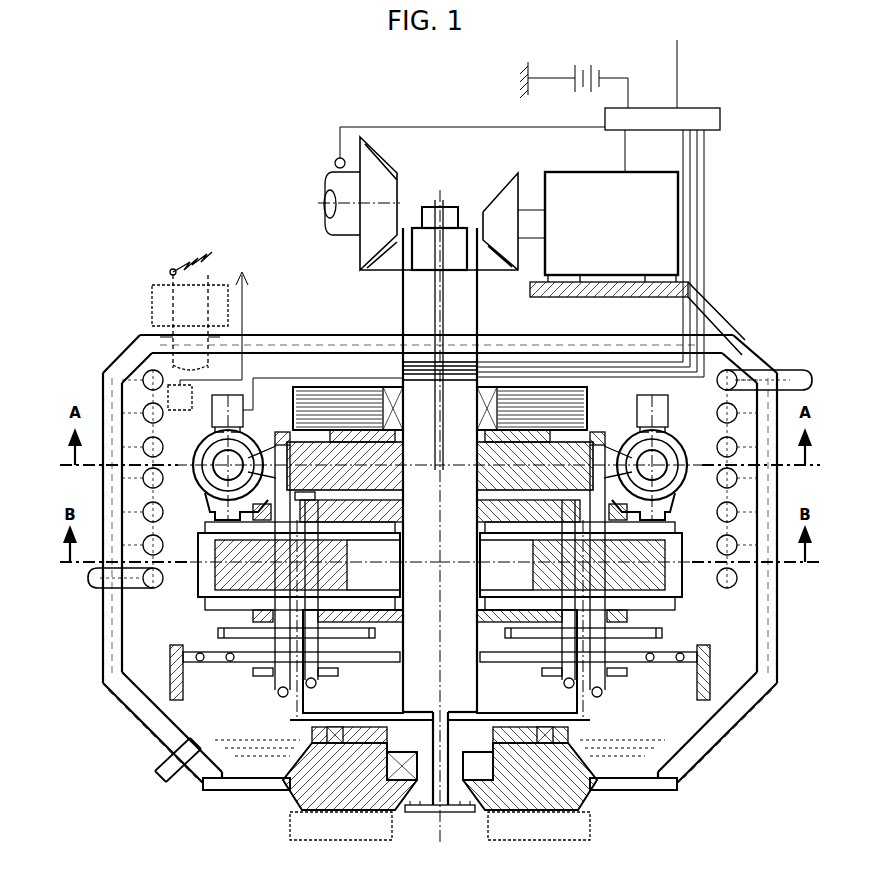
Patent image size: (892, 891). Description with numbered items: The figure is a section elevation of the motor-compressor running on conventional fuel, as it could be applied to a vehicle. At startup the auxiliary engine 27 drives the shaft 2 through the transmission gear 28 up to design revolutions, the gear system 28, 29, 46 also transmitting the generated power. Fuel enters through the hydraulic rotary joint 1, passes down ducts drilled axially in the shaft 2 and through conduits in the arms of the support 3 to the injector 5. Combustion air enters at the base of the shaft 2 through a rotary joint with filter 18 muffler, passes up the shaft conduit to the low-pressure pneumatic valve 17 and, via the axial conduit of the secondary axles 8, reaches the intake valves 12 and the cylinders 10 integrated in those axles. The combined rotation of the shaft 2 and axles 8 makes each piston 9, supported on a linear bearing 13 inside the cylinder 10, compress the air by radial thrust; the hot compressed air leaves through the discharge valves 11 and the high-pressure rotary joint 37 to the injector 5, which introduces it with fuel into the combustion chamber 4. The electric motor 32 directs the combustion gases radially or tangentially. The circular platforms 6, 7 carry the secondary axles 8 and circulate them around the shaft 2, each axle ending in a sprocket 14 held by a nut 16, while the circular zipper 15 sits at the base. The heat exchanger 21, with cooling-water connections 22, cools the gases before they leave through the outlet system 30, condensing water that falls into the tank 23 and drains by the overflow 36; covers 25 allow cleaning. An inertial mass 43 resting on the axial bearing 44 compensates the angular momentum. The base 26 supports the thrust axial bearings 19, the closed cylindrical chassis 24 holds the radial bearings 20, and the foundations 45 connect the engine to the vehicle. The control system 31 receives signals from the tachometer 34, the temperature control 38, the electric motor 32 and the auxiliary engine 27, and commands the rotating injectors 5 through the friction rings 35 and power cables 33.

The rotary joint 1 is at (440, 217).
The shaft 2 is at (440, 517).
The support 3 is at (307, 466).
The combustion chamber 4 is at (230, 457).
The injector 5 is at (269, 449).
The platform 6 is at (397, 515).
The platform 7 is at (403, 617).
The secondary axles 8 is at (312, 676).
The piston 9 is at (315, 565).
The cylinders 10 is at (373, 565).
The discharge valves 11 is at (208, 526).
The intake valves 12 is at (286, 606).
The linear bearing 13 is at (333, 588).
The sprocket 14 is at (226, 635).
The circular zipper 15 is at (173, 659).
The nut 16 is at (284, 677).
The valve 17 is at (279, 582).
The filter 18 is at (440, 801).
The thrust axial bearings 19 is at (478, 766).
The radial bearings 20 is at (530, 736).
The heat exchanger 21 is at (142, 479).
The connections 22 is at (106, 578).
The tank 23 is at (243, 769).
The chassis 24 is at (748, 688).
The covers 25 is at (246, 792).
The base 26 is at (350, 776).
The auxiliary engine 27 is at (545, 224).
The transmission gear 28 is at (492, 221).
The gear system 29 is at (481, 258).
The outlet system 30 is at (190, 311).
The control system 31 is at (620, 85).
The electric motor 32 is at (227, 413).
The cables 33 is at (718, 248).
The tachometer 34 is at (458, 145).
The friction rings 35 is at (425, 370).
The overflow 36 is at (175, 769).
The rotary joint 37 is at (300, 500).
The temperature control 38 is at (180, 397).
The inertial mass 43 is at (348, 414).
The axial bearing 44 is at (565, 427).
The foundations 45 is at (341, 826).
The gear system 46 is at (365, 203).